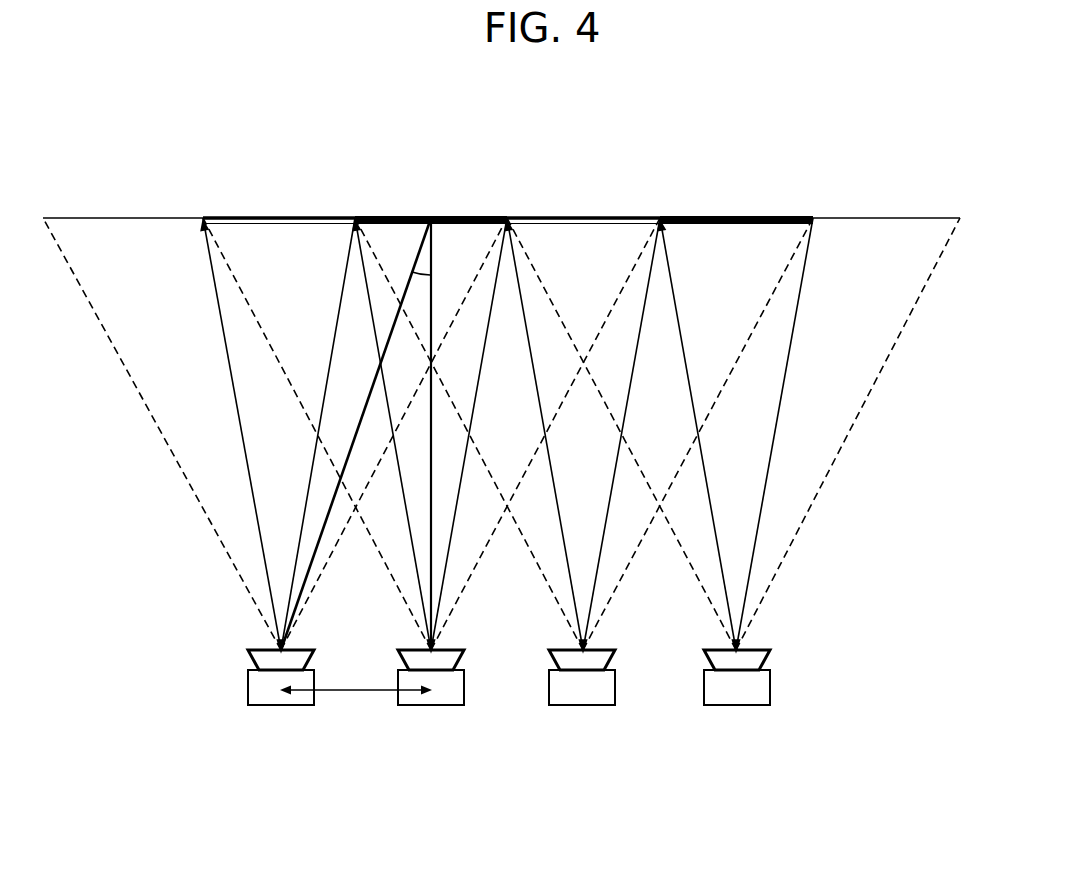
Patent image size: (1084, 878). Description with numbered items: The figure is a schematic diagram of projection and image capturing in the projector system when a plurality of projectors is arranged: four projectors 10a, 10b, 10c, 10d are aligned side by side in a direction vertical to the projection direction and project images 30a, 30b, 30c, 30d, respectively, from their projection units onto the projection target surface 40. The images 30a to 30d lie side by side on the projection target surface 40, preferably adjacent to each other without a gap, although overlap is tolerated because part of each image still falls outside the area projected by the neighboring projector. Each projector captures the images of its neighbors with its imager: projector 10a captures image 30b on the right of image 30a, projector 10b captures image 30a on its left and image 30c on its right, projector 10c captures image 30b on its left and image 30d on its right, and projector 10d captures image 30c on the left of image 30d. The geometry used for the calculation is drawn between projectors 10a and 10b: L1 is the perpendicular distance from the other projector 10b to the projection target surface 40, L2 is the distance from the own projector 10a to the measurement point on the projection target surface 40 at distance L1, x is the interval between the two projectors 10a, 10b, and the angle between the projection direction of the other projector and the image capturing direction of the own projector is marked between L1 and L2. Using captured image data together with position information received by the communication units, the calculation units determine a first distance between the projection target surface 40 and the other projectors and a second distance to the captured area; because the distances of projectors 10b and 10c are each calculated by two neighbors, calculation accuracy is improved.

The projection target surface 40 is at (158, 217).
The image 30a is at (270, 217).
The image 30b is at (420, 217).
The image 30c is at (573, 217).
The image 30d is at (723, 217).
The projector 10a is at (282, 705).
The projector 10b is at (432, 705).
The projector 10c is at (582, 705).
The projector 10d is at (736, 705).
The distance between another projector and projection target surface L1 is at (432, 572).
The distance between own projector and captured area L2 is at (313, 552).
The interval between projectors x is at (353, 690).